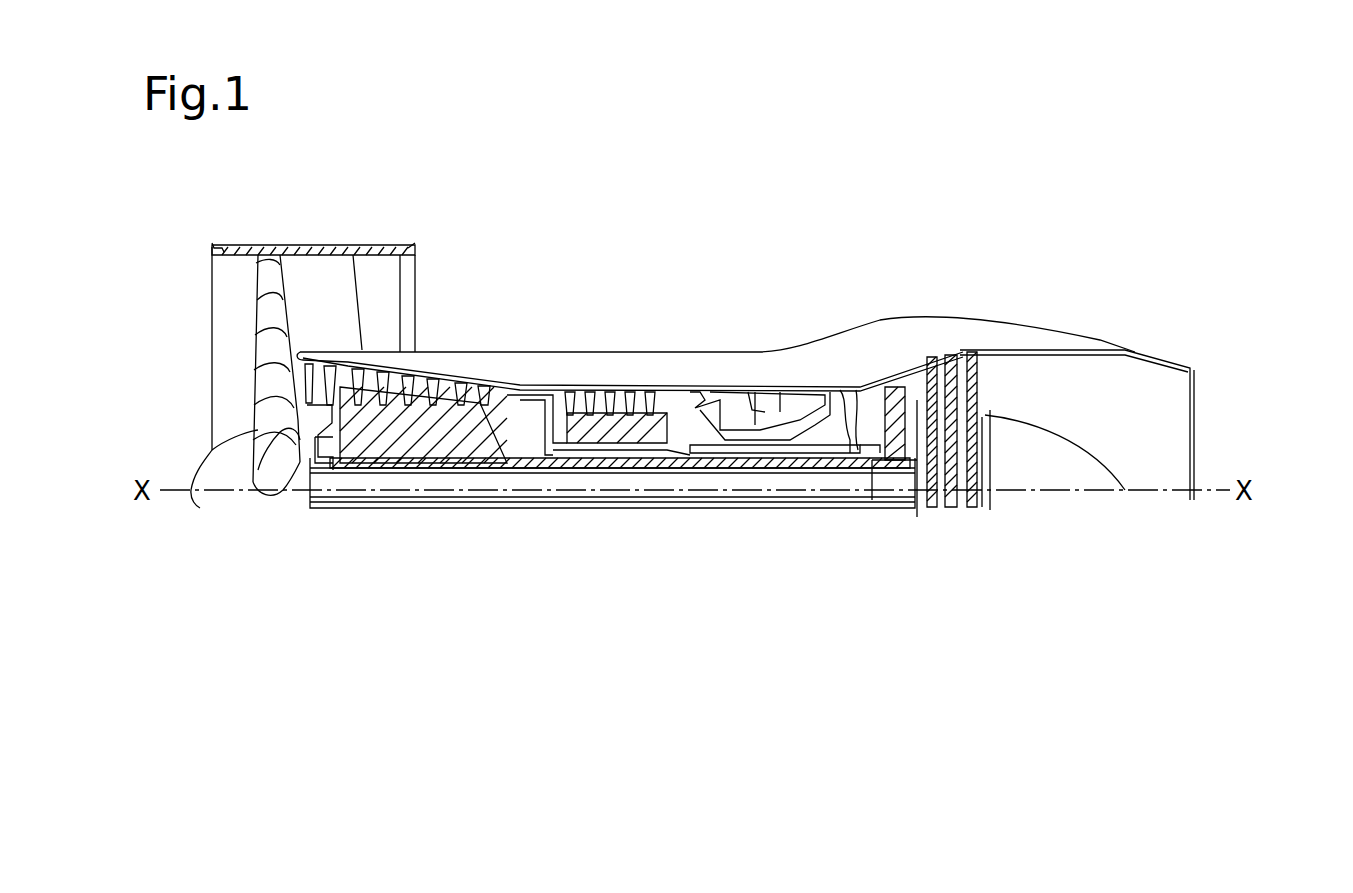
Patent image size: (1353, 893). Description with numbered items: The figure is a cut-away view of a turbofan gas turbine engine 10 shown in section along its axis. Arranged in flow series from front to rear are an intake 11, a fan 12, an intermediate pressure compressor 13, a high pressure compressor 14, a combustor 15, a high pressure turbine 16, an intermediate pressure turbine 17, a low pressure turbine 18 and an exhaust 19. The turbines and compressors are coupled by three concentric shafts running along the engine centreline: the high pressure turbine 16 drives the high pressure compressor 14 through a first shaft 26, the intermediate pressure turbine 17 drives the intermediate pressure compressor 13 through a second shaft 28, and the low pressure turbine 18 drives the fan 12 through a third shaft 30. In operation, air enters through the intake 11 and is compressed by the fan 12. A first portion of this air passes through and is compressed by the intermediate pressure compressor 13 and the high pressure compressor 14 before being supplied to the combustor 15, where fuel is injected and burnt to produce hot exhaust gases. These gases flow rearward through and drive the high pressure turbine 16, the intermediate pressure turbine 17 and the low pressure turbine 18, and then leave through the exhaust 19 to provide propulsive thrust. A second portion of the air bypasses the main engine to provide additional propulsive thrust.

The turbofan gas turbine engine 10 is at (612, 268).
The intake 11 is at (172, 352).
The fan 12 is at (283, 290).
The intermediate pressure compressor 13 is at (423, 415).
The high pressure compressor 14 is at (617, 388).
The combustor 15 is at (770, 375).
The high pressure turbine 16 is at (847, 388).
The intermediate pressure turbine 17 is at (895, 387).
The low pressure turbine 18 is at (983, 383).
The exhaust 19 is at (1168, 447).
The first shaft 26 is at (825, 468).
The second shaft 28 is at (560, 465).
The third shaft 30 is at (418, 505).